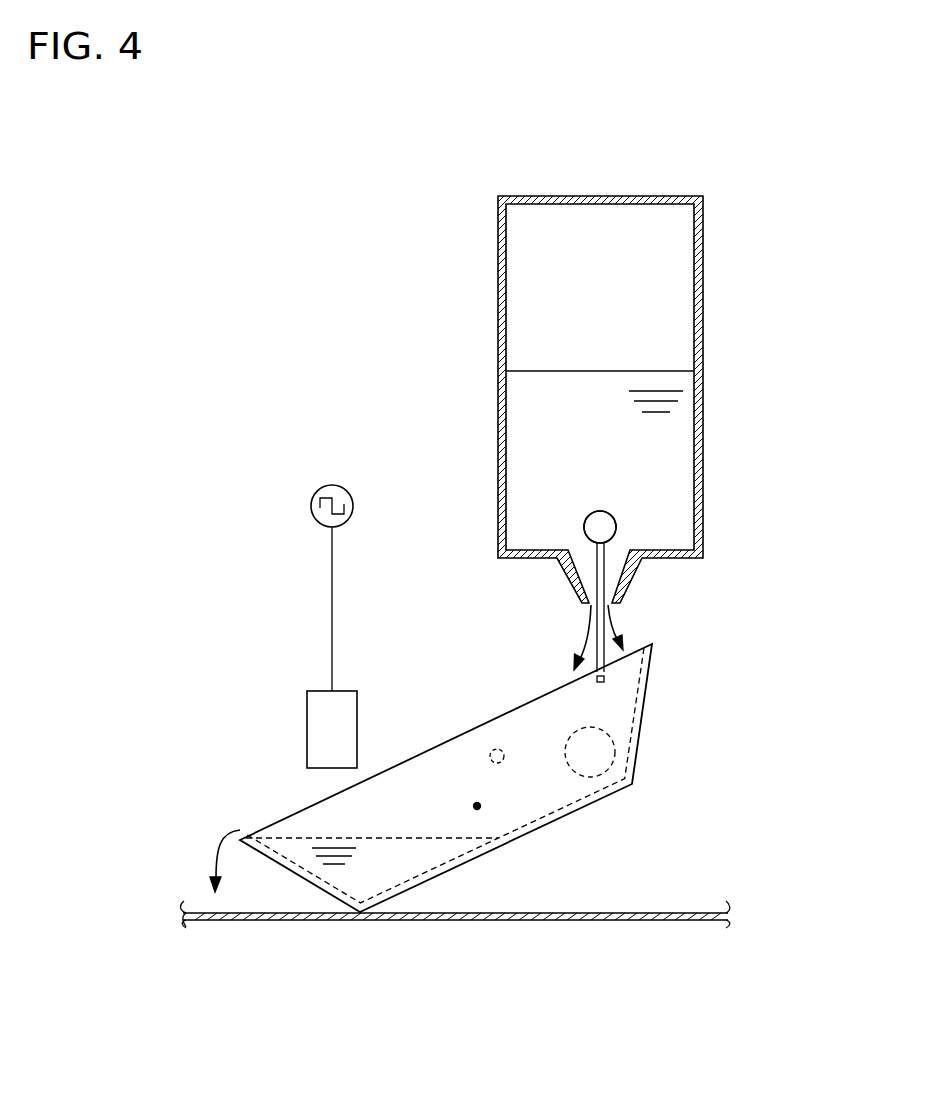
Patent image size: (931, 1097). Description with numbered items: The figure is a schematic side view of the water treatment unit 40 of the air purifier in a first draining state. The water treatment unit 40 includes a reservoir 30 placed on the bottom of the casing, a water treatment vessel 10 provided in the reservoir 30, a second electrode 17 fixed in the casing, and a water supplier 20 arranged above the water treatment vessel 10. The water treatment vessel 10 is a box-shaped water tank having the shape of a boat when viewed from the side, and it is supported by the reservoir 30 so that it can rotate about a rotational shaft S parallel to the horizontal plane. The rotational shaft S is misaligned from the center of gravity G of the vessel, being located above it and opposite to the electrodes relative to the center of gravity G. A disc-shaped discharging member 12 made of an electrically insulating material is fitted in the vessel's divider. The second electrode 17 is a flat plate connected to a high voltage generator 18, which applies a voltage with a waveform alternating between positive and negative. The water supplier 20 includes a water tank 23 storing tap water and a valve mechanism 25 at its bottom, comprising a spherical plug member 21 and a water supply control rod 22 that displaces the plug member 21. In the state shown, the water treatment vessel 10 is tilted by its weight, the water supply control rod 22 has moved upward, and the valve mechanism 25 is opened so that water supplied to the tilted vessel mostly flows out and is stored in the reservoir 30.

The water treatment vessel 10 is at (650, 670).
The discharging member 12 is at (612, 740).
The second electrode 17 is at (307, 718).
The high voltage generator 18 is at (331, 485).
The water supplier 20 is at (704, 362).
The plug member 21 is at (616, 522).
The water supply control rod 22 is at (599, 632).
The water tank 23 is at (704, 472).
The valve mechanism 25 is at (600, 500).
The reservoir 30 is at (684, 921).
The water treatment unit 40 is at (283, 303).
The center of gravity G is at (477, 806).
The rotational shaft S is at (504, 756).